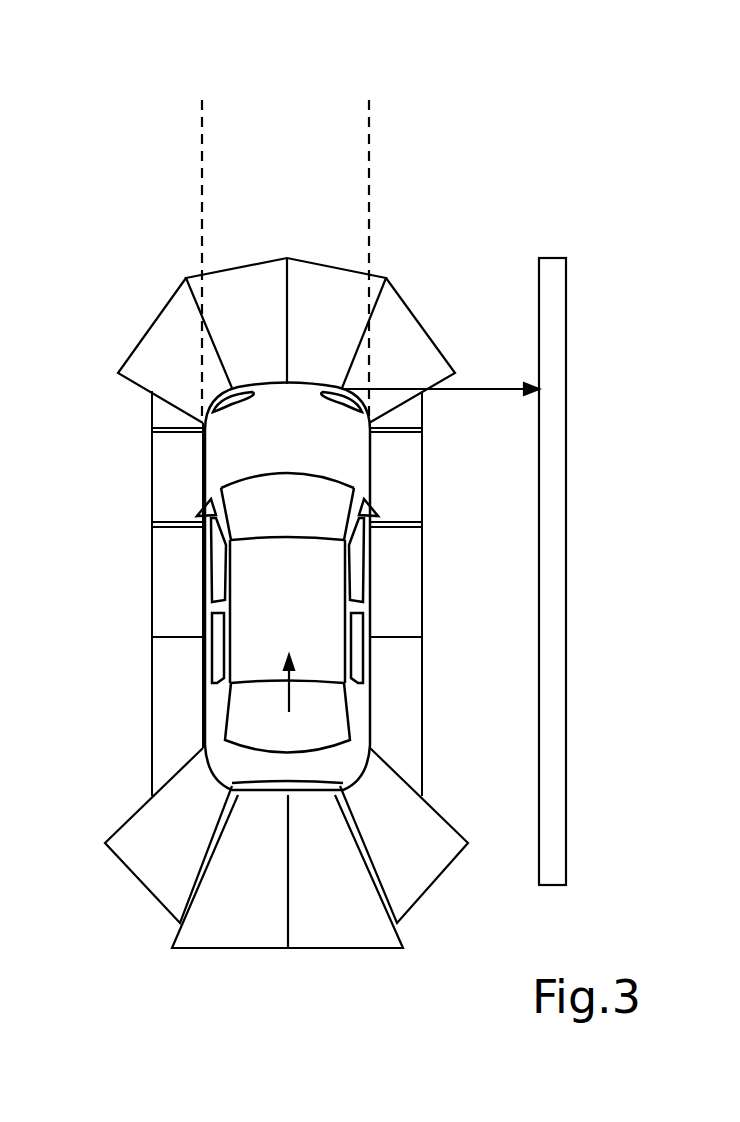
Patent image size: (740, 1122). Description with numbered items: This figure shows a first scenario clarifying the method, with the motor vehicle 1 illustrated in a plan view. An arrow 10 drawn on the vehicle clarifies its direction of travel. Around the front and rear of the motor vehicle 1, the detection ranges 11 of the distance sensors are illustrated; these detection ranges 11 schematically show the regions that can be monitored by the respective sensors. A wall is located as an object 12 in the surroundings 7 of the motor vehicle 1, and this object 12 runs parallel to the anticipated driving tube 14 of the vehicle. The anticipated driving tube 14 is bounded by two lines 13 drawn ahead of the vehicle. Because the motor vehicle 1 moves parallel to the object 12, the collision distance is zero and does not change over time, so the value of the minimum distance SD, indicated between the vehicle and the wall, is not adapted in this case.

The motor vehicle 1 is at (232, 467).
The surroundings 7 is at (108, 462).
The arrow 10 is at (288, 698).
The detection ranges 11 is at (257, 272).
The object 12 is at (558, 877).
The lines 13 is at (202, 128).
The anticipated driving tube 14 is at (327, 117).
The minimum distance SD is at (472, 388).